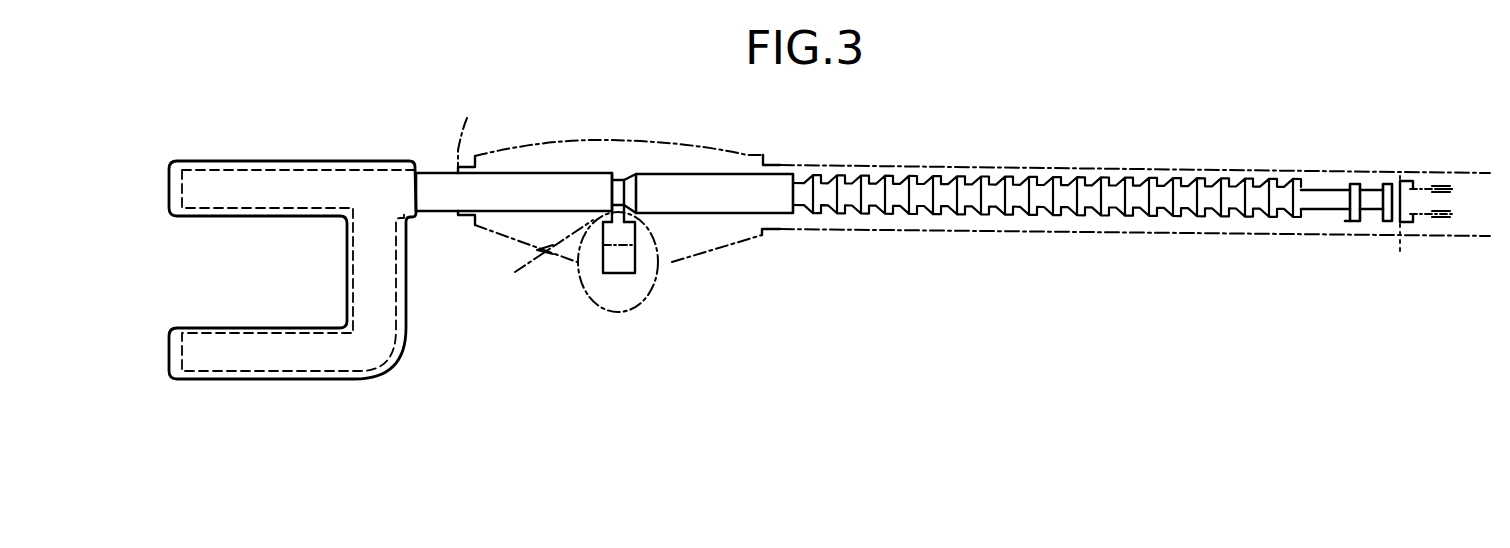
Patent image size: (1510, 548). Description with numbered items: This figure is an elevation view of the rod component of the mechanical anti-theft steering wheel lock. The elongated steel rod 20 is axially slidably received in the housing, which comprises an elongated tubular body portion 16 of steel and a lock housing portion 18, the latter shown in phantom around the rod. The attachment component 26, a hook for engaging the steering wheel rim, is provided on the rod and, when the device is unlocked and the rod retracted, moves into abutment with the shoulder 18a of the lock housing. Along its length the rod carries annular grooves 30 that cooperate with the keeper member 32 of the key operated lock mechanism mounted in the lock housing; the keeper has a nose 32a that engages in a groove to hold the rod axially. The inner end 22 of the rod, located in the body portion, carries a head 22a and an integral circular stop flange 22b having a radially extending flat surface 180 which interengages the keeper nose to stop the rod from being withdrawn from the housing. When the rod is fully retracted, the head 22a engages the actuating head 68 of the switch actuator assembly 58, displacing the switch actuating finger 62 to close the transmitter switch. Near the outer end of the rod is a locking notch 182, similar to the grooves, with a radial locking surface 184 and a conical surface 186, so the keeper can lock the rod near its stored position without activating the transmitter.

The elongated tubular body portion 16 is at (1111, 162).
The lock housing portion 18 is at (539, 131).
The shoulder 18a is at (467, 118).
The rod 20 is at (731, 229).
The inner end 22 is at (1313, 175).
The head 22a is at (1390, 222).
The stop flange 22b is at (1352, 183).
The attachment component 26 is at (328, 152).
The annular grooves 30 is at (962, 166).
The keeper member 32 is at (575, 290).
The nose 32a is at (520, 258).
The switch actuator assembly 58 is at (1446, 172).
The switch actuating finger 62 is at (1436, 232).
The actuating head 68 is at (1398, 258).
The flat surface 180 is at (1350, 222).
The locking notch 182 is at (641, 158).
The radial locking surface 184 is at (618, 172).
The conical surface 186 is at (636, 203).